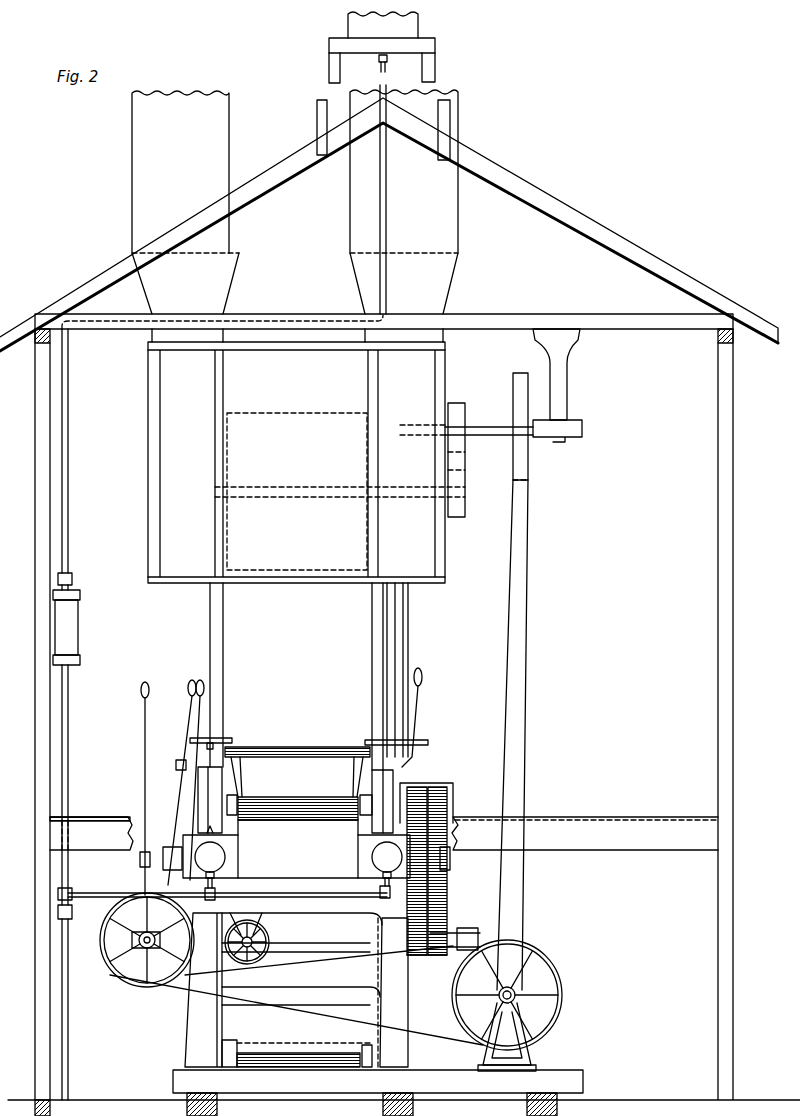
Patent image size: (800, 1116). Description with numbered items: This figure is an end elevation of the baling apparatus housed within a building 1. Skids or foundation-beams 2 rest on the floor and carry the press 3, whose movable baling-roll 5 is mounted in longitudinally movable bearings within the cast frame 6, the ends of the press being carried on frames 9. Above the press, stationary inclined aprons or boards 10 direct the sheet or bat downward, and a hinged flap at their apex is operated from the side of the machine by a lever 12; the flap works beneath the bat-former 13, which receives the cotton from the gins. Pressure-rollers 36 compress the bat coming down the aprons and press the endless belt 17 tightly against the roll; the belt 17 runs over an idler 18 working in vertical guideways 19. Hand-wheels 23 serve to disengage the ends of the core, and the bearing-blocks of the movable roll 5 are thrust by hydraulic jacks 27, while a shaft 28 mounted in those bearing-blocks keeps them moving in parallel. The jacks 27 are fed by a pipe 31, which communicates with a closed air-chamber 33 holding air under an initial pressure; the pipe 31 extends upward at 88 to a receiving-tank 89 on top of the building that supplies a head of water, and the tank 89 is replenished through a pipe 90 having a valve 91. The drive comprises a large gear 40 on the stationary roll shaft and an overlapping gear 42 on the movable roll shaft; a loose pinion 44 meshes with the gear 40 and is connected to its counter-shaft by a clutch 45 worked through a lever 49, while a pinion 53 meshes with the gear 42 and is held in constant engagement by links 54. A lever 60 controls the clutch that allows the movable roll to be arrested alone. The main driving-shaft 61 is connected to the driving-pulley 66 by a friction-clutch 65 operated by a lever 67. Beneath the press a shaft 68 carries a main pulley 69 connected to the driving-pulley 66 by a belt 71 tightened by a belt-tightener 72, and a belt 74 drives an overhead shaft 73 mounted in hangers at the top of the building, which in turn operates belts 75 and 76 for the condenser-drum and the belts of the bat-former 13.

The building 1 is at (400, 607).
The skids or foundation-beams 2 is at (378, 1093).
The press 3 is at (297, 762).
The baling-roll 5 is at (296, 822).
The cast frame 6 is at (208, 833).
The frame 9 is at (296, 990).
The stationary aprons or boards 10 is at (297, 777).
The lever 12 is at (418, 716).
The bat-former 13 is at (306, 554).
The endless belt 17 is at (301, 1012).
The idler 18 is at (371, 1048).
The vertical guideways 19 is at (232, 1044).
The hand-wheels 23 is at (232, 741).
The hydraulic jack 27 is at (298, 860).
The shaft 28 is at (296, 935).
The pipe 31 is at (229, 889).
The closed air-chamber 33 is at (77, 627).
The pressure-rollers 36 is at (315, 796).
The large gear 40 is at (447, 790).
The gear 42 is at (420, 790).
The loose pinion 44 is at (445, 958).
The clutch 45 is at (467, 930).
The lever 49 is at (190, 740).
The pinion 53 is at (425, 955).
The links 54 is at (175, 848).
The lever 60 is at (203, 732).
The main driving-shaft 61 is at (153, 948).
The friction-clutch 65 is at (147, 940).
The driving-pulley 66 is at (143, 940).
The lever 67 is at (156, 788).
The shaft 68 is at (525, 1000).
The main pulley 69 is at (519, 1005).
The belt 71 is at (422, 1038).
The belt-tightener 72 is at (272, 935).
The shaft 73 is at (513, 385).
The belt 74 is at (529, 566).
The belt 75 is at (461, 461).
The belt 76 is at (409, 616).
The upward extension of pipe 88 is at (70, 455).
The receiving-tank 89 is at (382, 163).
The pipe 90 is at (70, 1007).
The valve 91 is at (77, 916).